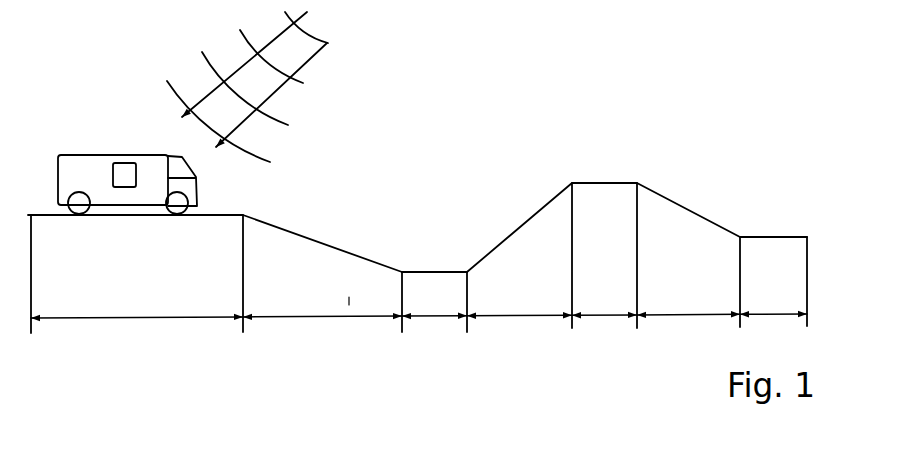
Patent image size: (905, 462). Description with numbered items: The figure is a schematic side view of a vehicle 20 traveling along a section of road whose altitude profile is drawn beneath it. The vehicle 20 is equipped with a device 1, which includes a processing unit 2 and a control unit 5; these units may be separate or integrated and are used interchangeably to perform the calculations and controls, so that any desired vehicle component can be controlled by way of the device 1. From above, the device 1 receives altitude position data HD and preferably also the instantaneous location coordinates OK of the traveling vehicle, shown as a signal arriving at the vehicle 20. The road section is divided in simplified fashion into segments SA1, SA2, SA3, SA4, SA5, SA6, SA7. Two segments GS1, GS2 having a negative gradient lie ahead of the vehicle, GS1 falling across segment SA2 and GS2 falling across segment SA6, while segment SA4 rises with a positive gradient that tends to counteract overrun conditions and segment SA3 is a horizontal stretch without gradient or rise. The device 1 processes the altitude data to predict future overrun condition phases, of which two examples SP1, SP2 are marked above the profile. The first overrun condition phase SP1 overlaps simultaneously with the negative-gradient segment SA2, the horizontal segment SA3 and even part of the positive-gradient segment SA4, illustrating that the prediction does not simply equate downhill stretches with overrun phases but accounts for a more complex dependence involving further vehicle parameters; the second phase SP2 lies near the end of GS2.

The vehicle 20 is at (123, 162).
The device 1 is at (132, 149).
The processing unit 2 is at (132, 149).
The control unit 5 is at (120, 170).
The location coordinates OK is at (302, 87).
The altitude position data HD is at (265, 95).
The first section-of-road segment with negative gradient GS1 is at (313, 240).
The second section-of-road segment with negative gradient GS2 is at (692, 210).
The first overrun condition phase SP1 is at (368, 250).
The second overrun condition phase SP2 is at (715, 217).
The first road segment SA1 is at (135, 274).
The second road segment SA2 is at (322, 265).
The third road segment SA3 is at (421, 278).
The fourth road segment SA4 is at (519, 255).
The fifth road segment SA5 is at (604, 255).
The sixth road segment SA6 is at (688, 247).
The seventh road segment SA7 is at (761, 258).